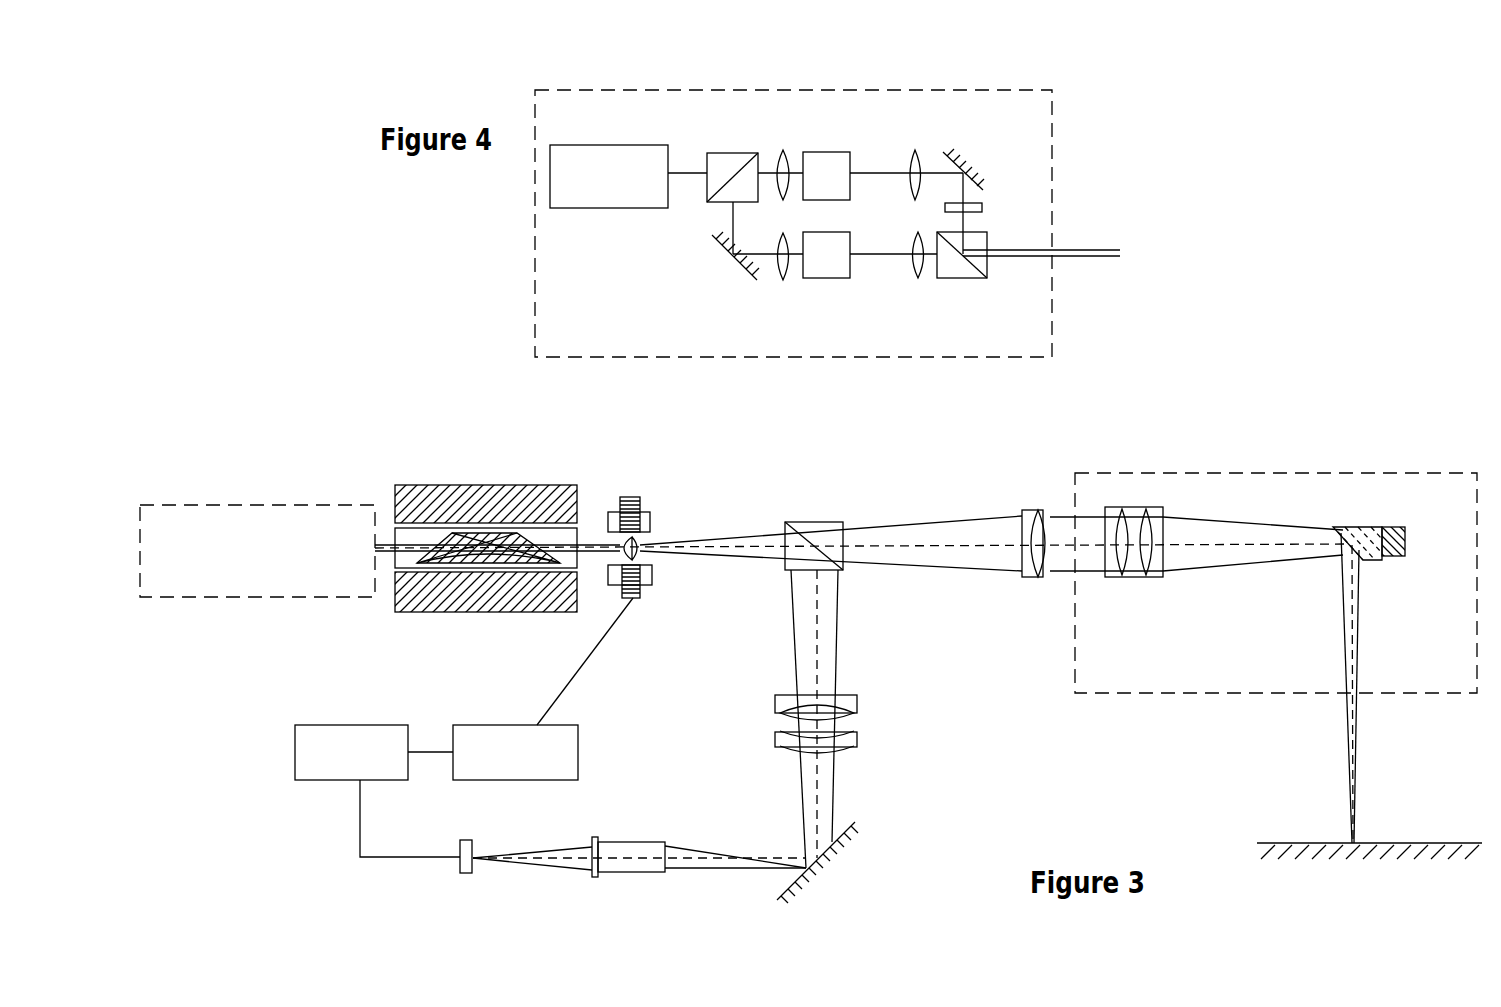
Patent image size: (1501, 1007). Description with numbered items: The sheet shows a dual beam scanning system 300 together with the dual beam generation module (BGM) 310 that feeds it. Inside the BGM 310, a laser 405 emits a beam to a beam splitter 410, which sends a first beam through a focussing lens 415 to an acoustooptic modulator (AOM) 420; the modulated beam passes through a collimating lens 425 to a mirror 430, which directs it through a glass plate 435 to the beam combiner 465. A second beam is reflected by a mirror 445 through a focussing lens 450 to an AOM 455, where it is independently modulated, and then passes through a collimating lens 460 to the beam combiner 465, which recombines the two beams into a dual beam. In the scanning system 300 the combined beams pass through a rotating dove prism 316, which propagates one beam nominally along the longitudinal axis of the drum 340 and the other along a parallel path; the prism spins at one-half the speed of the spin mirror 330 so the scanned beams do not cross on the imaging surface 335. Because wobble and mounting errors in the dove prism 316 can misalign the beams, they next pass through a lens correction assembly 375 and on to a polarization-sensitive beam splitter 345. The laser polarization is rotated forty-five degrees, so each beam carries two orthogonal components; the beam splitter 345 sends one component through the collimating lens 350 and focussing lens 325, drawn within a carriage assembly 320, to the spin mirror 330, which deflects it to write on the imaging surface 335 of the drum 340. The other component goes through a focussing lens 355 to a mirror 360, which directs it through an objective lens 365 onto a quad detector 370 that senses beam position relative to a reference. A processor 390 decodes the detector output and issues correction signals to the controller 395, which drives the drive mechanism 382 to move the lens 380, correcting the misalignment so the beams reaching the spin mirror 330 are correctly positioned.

In FIG. 3, the dual beam scanning system 300 is at (850, 442).
In FIG. 4, the dual beam generation module (BGM) 310 is at (1084, 110).
In FIG. 3, the dual beam generation module (BGM) 310 is at (228, 504).
In FIG. 3, the rotating dove prism 316 is at (440, 612).
In FIG. 3, the carriage assembly 320 is at (1076, 672).
In FIG. 3, the focussing lens 325 is at (1105, 578).
In FIG. 3, the spin mirror 330 is at (1370, 562).
In FIG. 3, the imaging surface 335 is at (1370, 824).
In FIG. 3, the drum 340 is at (1300, 850).
In FIG. 3, the beam splitter 345 is at (820, 522).
In FIG. 3, the collimating lens 350 is at (1033, 510).
In FIG. 3, the focussing lens 355 is at (857, 714).
In FIG. 3, the mirror 360 is at (800, 880).
In FIG. 3, the objective lens 365 is at (650, 873).
In FIG. 3, the quad detector 370 is at (462, 875).
In FIG. 3, the lens correction assembly 375 is at (613, 594).
In FIG. 3, the lens 380 is at (642, 538).
In FIG. 3, the drive mechanism 382 is at (641, 590).
In FIG. 3, the processor 390 is at (323, 781).
In FIG. 3, the lens correction assembly controller 395 is at (490, 725).
In FIG. 4, the laser 405 is at (581, 145).
In FIG. 4, the beam splitter 410 is at (733, 153).
In FIG. 4, the focussing lens 415 is at (785, 147).
In FIG. 4, the acoustooptic modulator (AOM) 420 is at (815, 152).
In FIG. 4, the collimating lens 425 is at (915, 150).
In FIG. 4, the mirror 430 is at (990, 166).
In FIG. 4, the glass plate 435 is at (983, 208).
In FIG. 4, the mirror 445 is at (712, 240).
In FIG. 4, the focussing lens 450 is at (783, 282).
In FIG. 4, the acoustooptic modulator (AOM) 455 is at (813, 278).
In FIG. 4, the collimating lens 460 is at (918, 280).
In FIG. 4, the beam combiner 465 is at (958, 280).